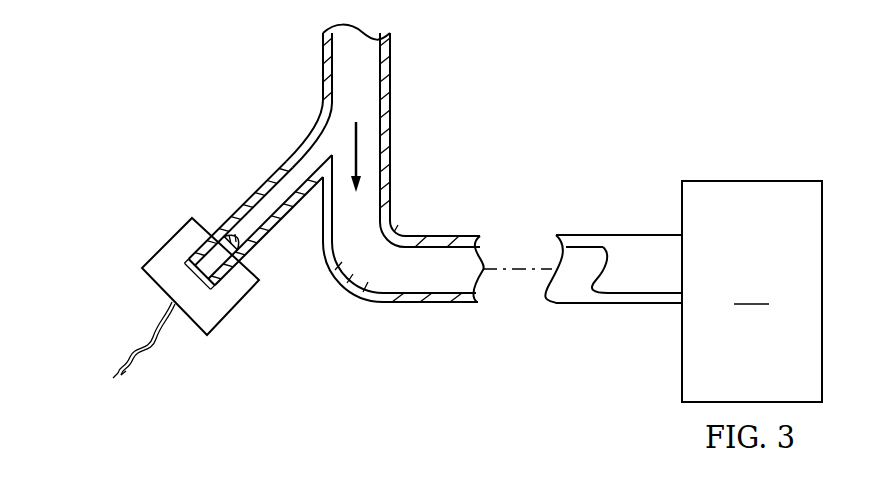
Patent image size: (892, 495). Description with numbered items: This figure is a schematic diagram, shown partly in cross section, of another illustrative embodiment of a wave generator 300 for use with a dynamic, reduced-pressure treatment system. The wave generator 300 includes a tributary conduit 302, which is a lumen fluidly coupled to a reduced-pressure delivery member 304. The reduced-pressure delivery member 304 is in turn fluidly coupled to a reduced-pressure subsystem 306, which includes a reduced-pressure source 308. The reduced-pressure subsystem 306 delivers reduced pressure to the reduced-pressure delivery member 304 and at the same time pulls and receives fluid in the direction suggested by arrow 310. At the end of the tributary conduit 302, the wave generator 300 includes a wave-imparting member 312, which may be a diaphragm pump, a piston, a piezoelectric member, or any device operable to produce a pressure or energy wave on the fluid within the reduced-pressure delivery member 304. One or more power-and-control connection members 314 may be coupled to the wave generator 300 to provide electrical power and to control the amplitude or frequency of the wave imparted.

The wave generator 300 is at (162, 237).
The tributary conduit 302 is at (272, 178).
The reduced-pressure delivery member 304 is at (323, 72).
The reduced-pressure subsystem 306 is at (777, 175).
The reduced-pressure source 308 is at (751, 292).
The arrow 310 is at (357, 145).
The wave-imparting member 312 is at (240, 246).
The power-and-control connection member 314 is at (140, 345).